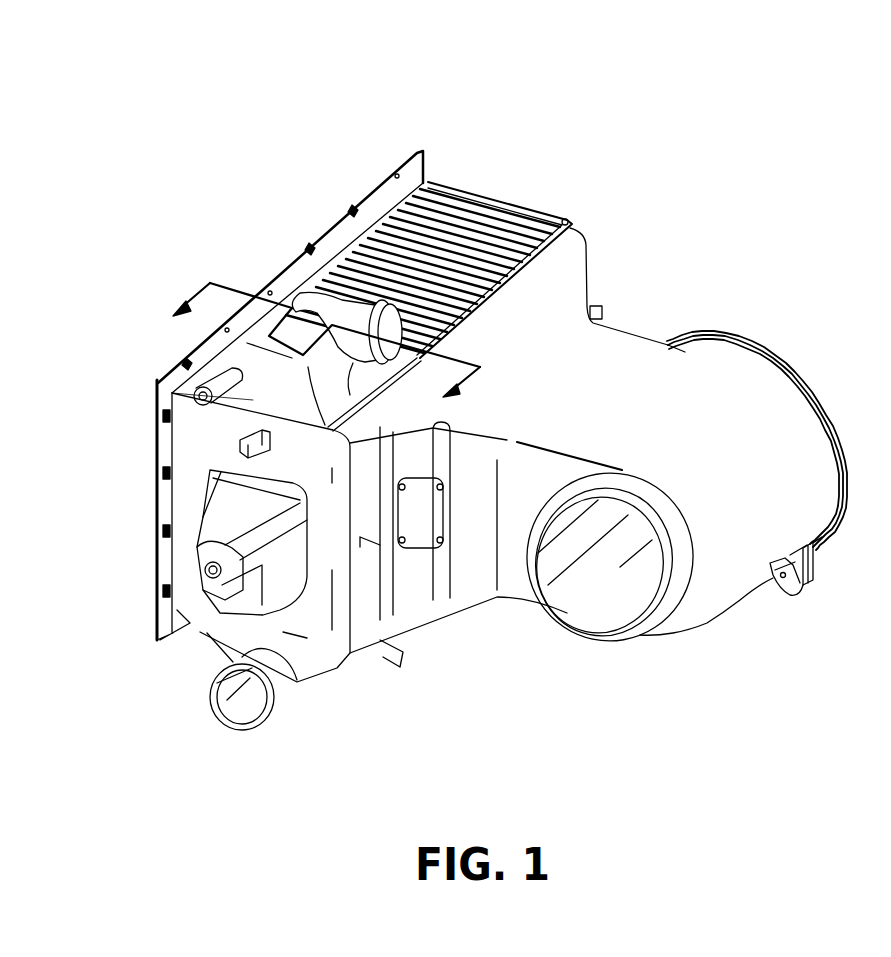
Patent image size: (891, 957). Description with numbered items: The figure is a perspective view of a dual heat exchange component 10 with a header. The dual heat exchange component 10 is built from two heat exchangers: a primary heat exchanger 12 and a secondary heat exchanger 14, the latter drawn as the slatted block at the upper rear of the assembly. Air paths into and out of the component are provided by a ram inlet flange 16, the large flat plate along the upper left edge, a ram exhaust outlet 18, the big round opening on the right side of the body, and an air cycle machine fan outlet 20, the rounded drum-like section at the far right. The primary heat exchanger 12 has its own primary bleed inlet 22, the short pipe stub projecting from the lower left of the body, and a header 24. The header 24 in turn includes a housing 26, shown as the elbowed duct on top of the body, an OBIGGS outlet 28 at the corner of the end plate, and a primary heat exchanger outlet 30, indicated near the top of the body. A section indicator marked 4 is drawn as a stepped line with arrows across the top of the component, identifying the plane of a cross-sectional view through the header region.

The dual heat exchange component 10 is at (180, 162).
The primary heat exchanger 12 is at (195, 437).
The secondary heat exchanger 14 is at (510, 207).
The ram inlet flange 16 is at (423, 160).
The ram exhaust outlet 18 is at (613, 613).
The air cycle machine fan outlet 20 is at (797, 370).
The primary bleed inlet 22 is at (220, 727).
The header 24 is at (253, 400).
The housing 26 is at (298, 293).
The OBIGGS outlet 28 is at (157, 380).
The primary heat exchanger outlet 30 is at (443, 348).
The section line 4- 4 is at (327, 337).